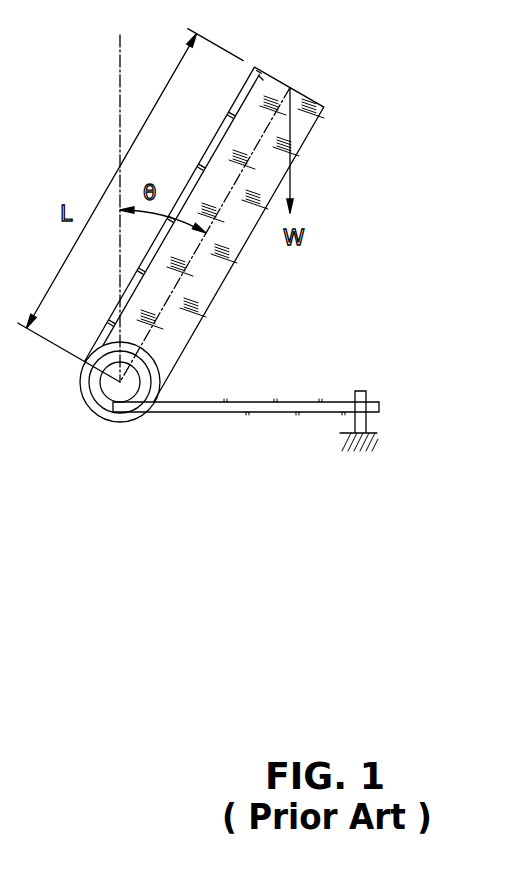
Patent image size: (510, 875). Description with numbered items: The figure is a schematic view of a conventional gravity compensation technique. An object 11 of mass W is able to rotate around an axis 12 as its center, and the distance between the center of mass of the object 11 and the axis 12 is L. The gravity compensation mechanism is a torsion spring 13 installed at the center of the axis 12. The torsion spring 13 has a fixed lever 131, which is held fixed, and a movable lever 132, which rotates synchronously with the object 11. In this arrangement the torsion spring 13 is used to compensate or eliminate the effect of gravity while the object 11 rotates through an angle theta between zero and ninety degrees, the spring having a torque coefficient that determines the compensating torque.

The object 11 is at (315, 122).
The axis 12 is at (120, 422).
The torsion spring 13 is at (87, 403).
The fixed lever 131 is at (250, 413).
The movable lever 132 is at (173, 251).